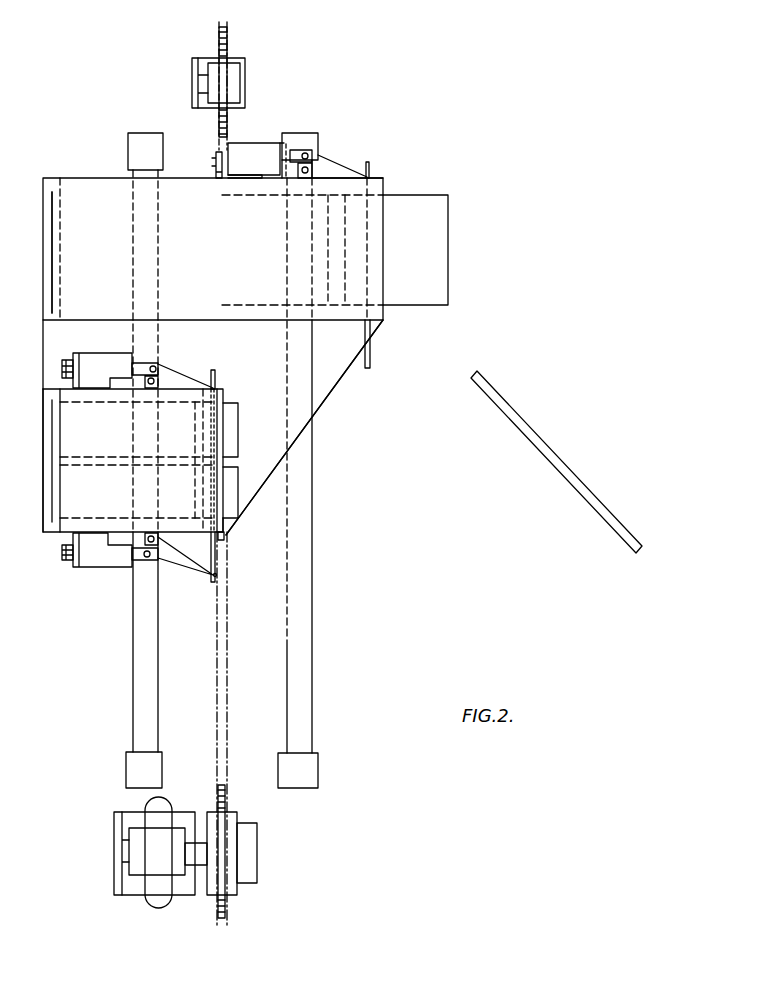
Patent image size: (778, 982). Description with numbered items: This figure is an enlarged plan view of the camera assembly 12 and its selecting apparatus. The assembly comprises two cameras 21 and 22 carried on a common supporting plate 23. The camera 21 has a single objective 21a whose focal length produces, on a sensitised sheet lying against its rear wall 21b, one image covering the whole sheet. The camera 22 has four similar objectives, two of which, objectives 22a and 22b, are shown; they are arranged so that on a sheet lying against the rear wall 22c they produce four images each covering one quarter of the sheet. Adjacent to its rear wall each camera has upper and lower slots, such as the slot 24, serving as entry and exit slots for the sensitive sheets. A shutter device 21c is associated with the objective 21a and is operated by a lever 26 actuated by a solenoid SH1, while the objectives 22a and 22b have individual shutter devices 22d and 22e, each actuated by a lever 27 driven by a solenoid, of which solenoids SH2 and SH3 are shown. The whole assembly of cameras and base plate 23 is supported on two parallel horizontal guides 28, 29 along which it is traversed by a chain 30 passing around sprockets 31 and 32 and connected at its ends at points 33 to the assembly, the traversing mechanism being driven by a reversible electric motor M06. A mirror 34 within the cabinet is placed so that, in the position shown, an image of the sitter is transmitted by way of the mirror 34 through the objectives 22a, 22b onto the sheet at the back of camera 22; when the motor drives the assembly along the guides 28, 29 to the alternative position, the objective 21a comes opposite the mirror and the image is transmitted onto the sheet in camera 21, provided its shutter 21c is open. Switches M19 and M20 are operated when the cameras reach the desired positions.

The camera assembly 12 is at (340, 385).
The camera 21 is at (88, 187).
The single objective 21a is at (425, 203).
The rear wall 21b is at (50, 217).
The shutter device 21c is at (370, 360).
The camera 22 is at (72, 430).
The objective 22a is at (252, 385).
The objective 22b is at (235, 505).
The rear wall 22c is at (48, 492).
The shutter device 22d is at (227, 362).
The shutter device 22e is at (213, 587).
The supporting plate 23 is at (320, 393).
The upper slot 24 is at (52, 254).
The lever 26 is at (343, 170).
The lever 27 is at (167, 372).
The horizontal guide 28 is at (305, 725).
The horizontal guide 29 is at (138, 715).
The chain 30 is at (223, 743).
The sprocket 31 is at (225, 50).
The sprocket 32 is at (223, 913).
The connection point 33 is at (216, 175).
The mirror 34 is at (557, 457).
The solenoid SH1 is at (255, 148).
The solenoid SH2 is at (117, 345).
The solenoid SH3 is at (110, 557).
The switch M20 is at (308, 145).
The switch M19 is at (307, 772).
The reversible electric motor M06 is at (152, 882).